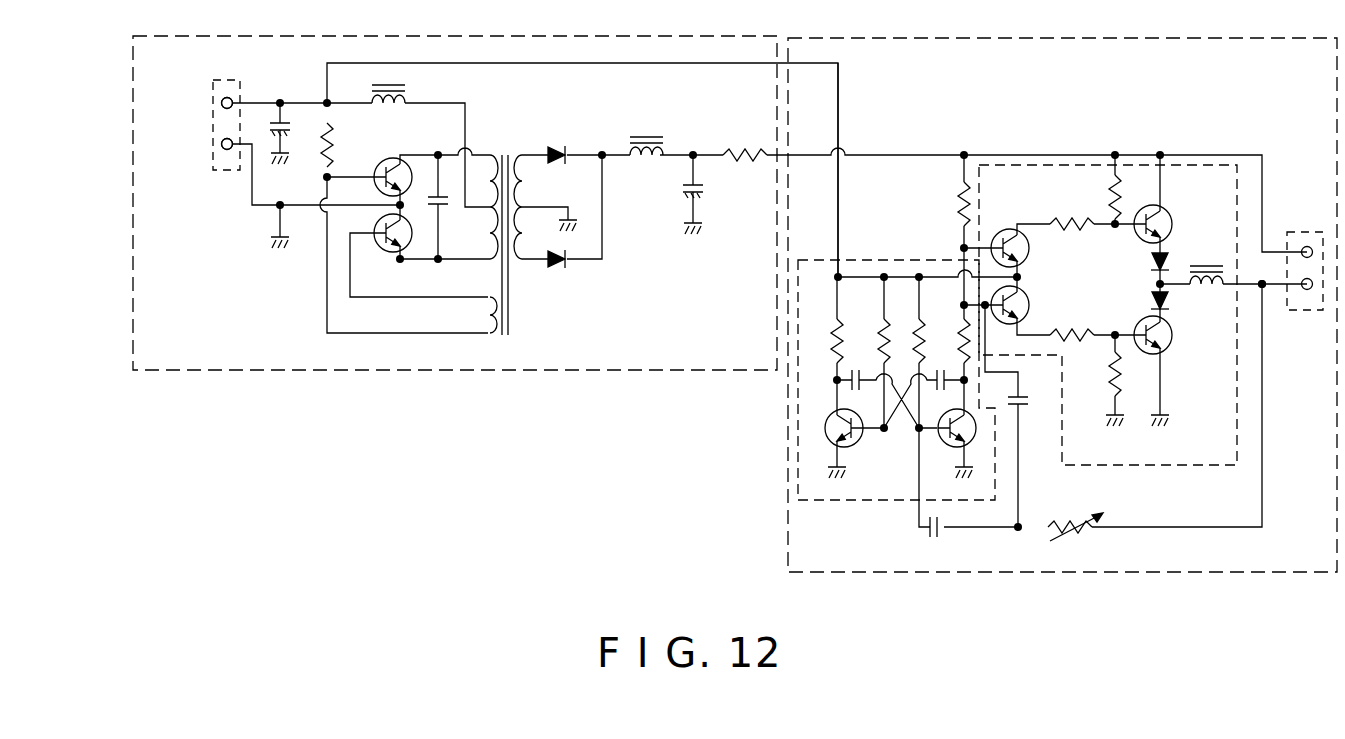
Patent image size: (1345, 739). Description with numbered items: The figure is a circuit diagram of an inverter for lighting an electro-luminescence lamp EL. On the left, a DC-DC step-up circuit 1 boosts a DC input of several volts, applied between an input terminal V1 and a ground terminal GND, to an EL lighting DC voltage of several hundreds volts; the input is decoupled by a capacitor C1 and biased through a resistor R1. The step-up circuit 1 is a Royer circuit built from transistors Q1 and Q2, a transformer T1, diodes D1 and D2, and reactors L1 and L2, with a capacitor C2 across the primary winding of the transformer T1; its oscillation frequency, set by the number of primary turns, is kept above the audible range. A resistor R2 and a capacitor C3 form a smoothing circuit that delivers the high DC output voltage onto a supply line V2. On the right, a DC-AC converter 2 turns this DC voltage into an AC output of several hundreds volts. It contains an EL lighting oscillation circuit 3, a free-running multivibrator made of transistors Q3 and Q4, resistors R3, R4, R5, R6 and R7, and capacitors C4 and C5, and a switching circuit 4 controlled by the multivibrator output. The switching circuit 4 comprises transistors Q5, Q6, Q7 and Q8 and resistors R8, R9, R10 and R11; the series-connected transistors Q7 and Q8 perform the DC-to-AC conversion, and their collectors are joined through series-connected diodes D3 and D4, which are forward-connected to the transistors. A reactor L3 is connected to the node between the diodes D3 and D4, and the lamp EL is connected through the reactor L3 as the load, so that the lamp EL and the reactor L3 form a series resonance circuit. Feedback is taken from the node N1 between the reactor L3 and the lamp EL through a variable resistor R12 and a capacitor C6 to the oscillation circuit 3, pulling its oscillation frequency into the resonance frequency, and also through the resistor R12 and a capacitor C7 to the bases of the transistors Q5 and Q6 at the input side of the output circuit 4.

The DC-DC step-up circuit 1 is at (578, 353).
The DC-AC converter 2 is at (1215, 557).
The EL lighting oscillation circuit 3 is at (823, 485).
The switching circuit 4 is at (1193, 447).
The input voltage terminal V1 is at (207, 103).
The ground terminal GND is at (196, 144).
The capacitor C1 is at (289, 128).
The resistor R1 is at (331, 128).
The transistor Q1 is at (393, 158).
The reactor L1 is at (406, 87).
The transistor Q2 is at (388, 255).
The capacitor C2 is at (447, 200).
The transformer T1 is at (505, 153).
The diode D1 is at (557, 145).
The diode D2 is at (557, 268).
The reactor L2 is at (644, 135).
The resistor R2 is at (746, 147).
The capacitor C3 is at (705, 190).
The supply voltage line V2 is at (858, 150).
The resistor R3 is at (829, 327).
The resistor R4 is at (873, 327).
The resistor R5 is at (907, 300).
The resistor R6 is at (953, 327).
The resistor R7 is at (955, 208).
The transistor Q3 is at (856, 445).
The transistor Q4 is at (947, 445).
The capacitor C4 is at (862, 365).
The capacitor C5 is at (940, 365).
The capacitor C6 is at (937, 532).
The capacitor C7 is at (1029, 400).
The transistor Q5 is at (1002, 234).
The transistor Q6 is at (1031, 307).
The transistor Q7 is at (1173, 216).
The transistor Q8 is at (1175, 351).
The resistor R8 is at (1106, 200).
The resistor R9 is at (1076, 230).
The resistor R10 is at (1089, 329).
The resistor R11 is at (1106, 372).
The variable resistor R12 is at (1069, 521).
The diode D3 is at (1151, 258).
The diode D4 is at (1151, 295).
The reactor L3 is at (1213, 265).
The EL lamp EL is at (1305, 257).
The node N1 is at (1260, 286).